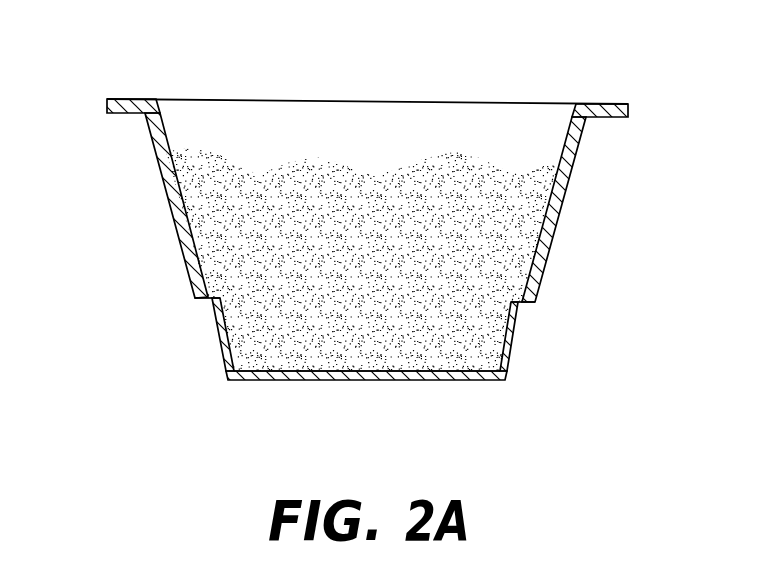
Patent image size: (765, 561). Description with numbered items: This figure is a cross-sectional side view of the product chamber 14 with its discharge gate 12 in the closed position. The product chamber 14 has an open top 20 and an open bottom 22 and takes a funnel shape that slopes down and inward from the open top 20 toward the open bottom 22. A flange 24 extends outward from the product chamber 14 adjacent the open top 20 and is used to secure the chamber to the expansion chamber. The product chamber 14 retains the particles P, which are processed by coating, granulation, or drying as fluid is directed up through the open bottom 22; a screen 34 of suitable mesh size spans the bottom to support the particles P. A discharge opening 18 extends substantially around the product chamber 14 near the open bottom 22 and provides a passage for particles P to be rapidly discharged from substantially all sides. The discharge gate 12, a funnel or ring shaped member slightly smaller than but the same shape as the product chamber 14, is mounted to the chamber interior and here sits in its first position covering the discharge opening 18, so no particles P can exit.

The open top 20 is at (254, 92).
The flange 24 is at (130, 112).
The product chamber 14 is at (168, 190).
The discharge gate 12 is at (217, 315).
The discharge opening 18 is at (212, 350).
The open bottom 22 is at (338, 390).
The screen 34 is at (418, 376).
The particles P is at (510, 240).